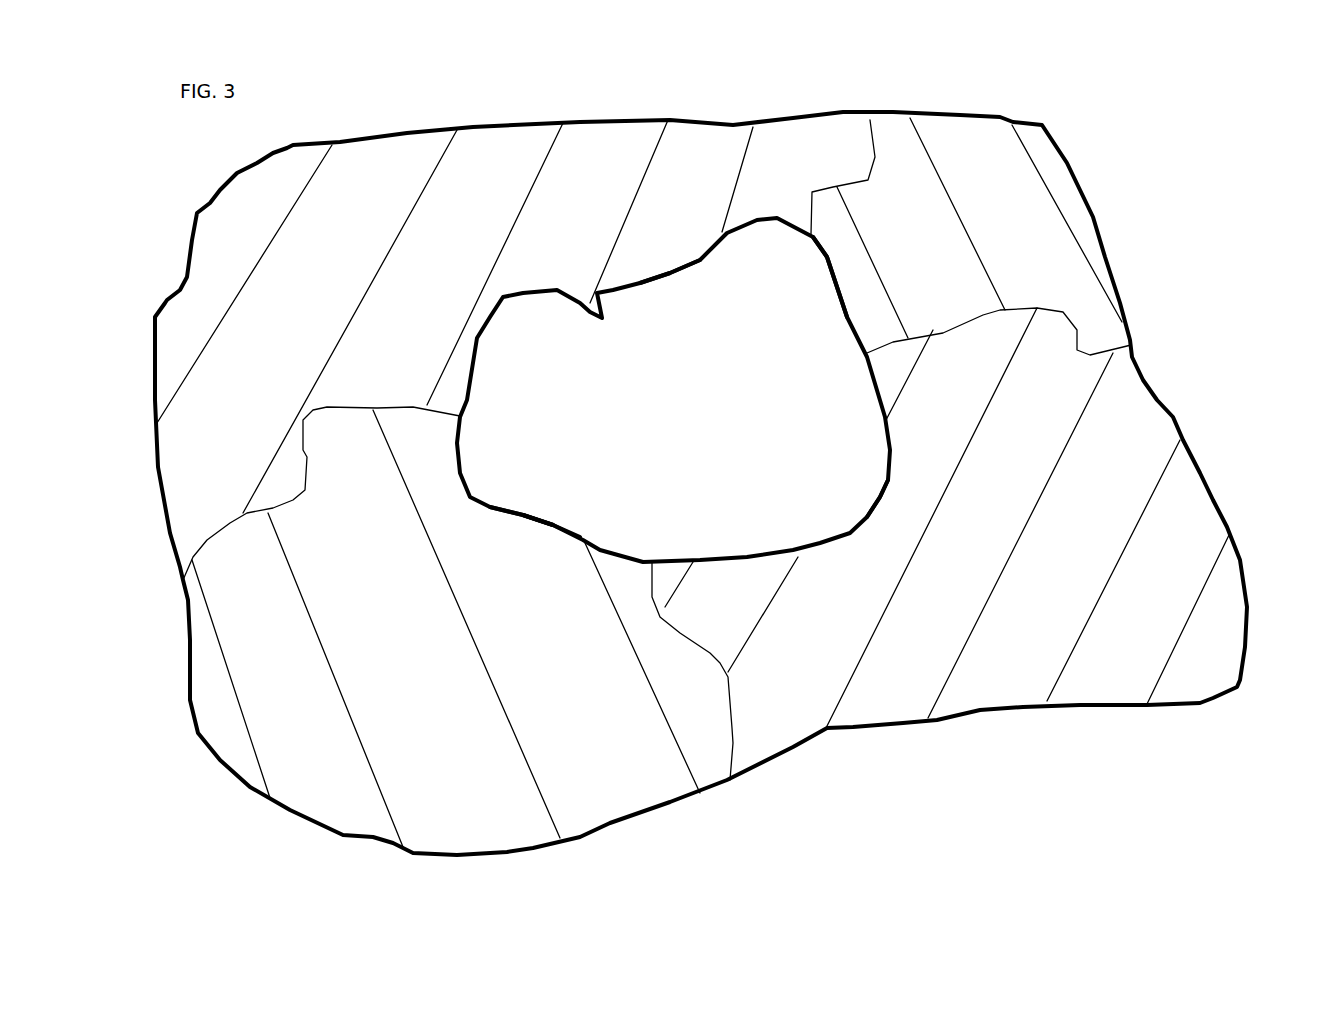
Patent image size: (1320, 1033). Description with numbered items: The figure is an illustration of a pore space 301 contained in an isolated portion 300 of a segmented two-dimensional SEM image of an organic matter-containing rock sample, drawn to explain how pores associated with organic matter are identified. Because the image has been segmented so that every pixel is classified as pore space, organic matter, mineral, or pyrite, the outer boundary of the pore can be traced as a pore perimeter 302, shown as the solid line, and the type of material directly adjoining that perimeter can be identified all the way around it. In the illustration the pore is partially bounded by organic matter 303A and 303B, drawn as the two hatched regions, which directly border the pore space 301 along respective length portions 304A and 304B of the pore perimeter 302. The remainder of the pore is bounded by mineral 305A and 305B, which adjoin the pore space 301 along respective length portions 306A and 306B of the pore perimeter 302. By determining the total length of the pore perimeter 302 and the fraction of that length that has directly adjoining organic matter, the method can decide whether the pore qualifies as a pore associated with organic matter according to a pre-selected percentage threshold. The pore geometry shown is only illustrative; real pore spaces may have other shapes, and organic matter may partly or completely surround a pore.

The isolated portion of a segmented 2D SEM image 300 is at (1101, 103).
The pore space 301 is at (652, 423).
The pore perimeter 302 is at (555, 530).
The organic matter 303A is at (458, 279).
The organic matter 303B is at (1042, 468).
The length portion of the pore perimeter 304A is at (662, 283).
The length portion of the pore perimeter 304B is at (875, 502).
The mineral 305A is at (398, 653).
The mineral 305B is at (1033, 225).
The length portion of the pore perimeter 306A is at (523, 510).
The length portion of the pore perimeter 306B is at (823, 250).